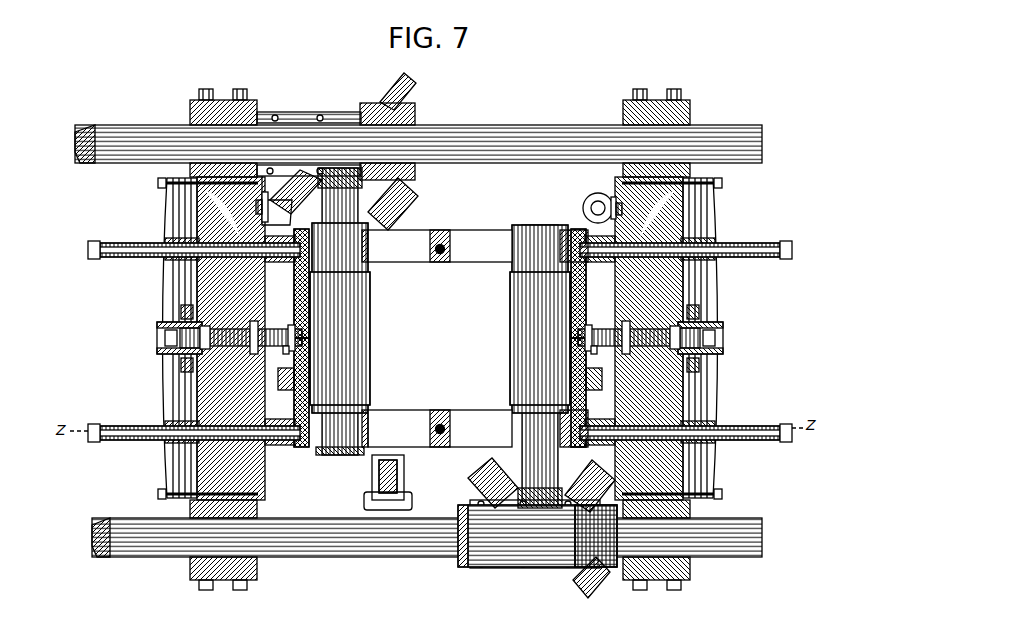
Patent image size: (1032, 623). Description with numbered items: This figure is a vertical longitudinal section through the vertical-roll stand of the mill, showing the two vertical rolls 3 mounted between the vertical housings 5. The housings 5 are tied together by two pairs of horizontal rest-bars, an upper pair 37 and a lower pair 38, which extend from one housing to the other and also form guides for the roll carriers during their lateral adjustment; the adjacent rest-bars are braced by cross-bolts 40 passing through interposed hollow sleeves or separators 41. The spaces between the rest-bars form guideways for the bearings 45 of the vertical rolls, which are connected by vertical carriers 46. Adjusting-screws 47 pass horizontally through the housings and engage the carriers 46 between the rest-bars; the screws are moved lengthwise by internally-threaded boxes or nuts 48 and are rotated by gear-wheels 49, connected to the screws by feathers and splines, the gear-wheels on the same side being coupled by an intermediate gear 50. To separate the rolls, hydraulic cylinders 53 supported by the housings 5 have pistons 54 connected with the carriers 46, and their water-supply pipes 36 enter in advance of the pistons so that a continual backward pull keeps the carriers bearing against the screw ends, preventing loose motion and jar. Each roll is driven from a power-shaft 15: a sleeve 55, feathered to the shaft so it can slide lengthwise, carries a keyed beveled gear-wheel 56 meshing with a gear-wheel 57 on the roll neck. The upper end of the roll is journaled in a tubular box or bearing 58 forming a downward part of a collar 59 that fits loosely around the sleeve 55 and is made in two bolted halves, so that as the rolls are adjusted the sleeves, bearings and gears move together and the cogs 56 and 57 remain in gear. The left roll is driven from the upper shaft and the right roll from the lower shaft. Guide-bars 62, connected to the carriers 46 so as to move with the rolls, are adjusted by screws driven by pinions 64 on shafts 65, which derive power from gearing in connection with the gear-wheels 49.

The vertical rolls 3 is at (366, 322).
The housing 5 is at (248, 287).
The power-shaft 15 is at (403, 558).
The water-supply pipes 36 is at (290, 330).
The upper rest-bars 37 is at (440, 246).
The lower rest-bars 38 is at (440, 428).
The cross-bolts 40 is at (442, 244).
The hollow sleeves 41 is at (430, 249).
The bearings 45 is at (518, 428).
The vertical carriers 46 is at (301, 290).
The adjusting-screws 47 is at (126, 247).
The internally-threaded boxes 48 is at (215, 262).
The gear-wheels 49 is at (185, 283).
The intermediate gear 50 is at (182, 364).
The hydraulic cylinders 53 is at (158, 338).
The pistons 54 is at (286, 352).
The sleeve 55 is at (350, 118).
The beveled gear-wheel 56 is at (388, 95).
The gear-wheel 57 is at (400, 206).
The tubular box 58 is at (320, 180).
The collar 59 is at (296, 115).
The guide-bars 62 is at (439, 379).
The pinions 64 is at (592, 196).
The shafts 65 is at (590, 209).